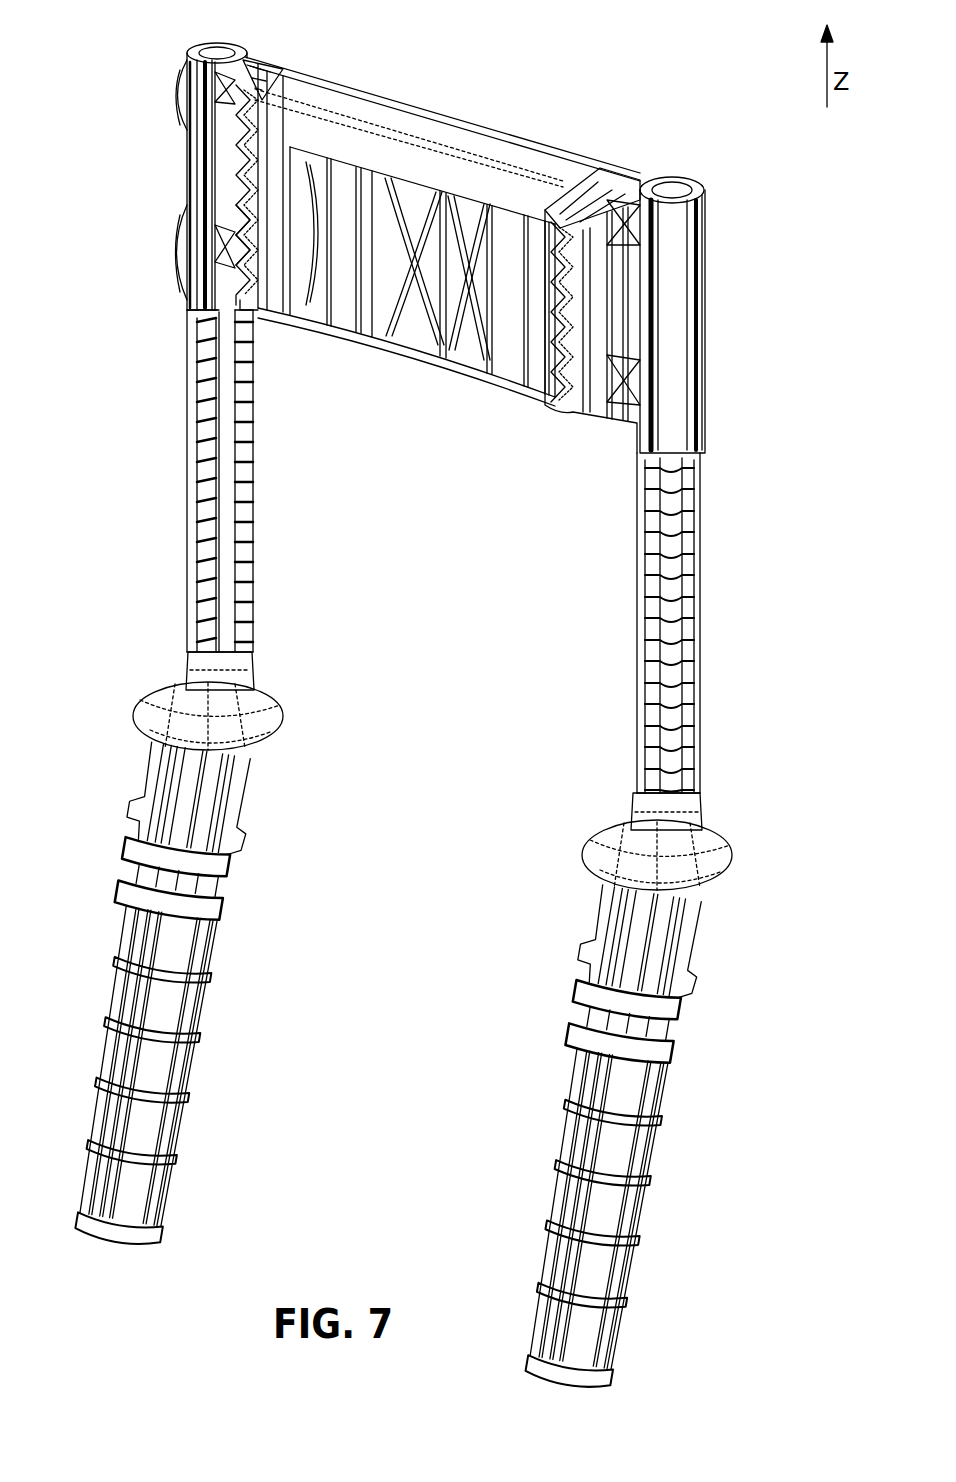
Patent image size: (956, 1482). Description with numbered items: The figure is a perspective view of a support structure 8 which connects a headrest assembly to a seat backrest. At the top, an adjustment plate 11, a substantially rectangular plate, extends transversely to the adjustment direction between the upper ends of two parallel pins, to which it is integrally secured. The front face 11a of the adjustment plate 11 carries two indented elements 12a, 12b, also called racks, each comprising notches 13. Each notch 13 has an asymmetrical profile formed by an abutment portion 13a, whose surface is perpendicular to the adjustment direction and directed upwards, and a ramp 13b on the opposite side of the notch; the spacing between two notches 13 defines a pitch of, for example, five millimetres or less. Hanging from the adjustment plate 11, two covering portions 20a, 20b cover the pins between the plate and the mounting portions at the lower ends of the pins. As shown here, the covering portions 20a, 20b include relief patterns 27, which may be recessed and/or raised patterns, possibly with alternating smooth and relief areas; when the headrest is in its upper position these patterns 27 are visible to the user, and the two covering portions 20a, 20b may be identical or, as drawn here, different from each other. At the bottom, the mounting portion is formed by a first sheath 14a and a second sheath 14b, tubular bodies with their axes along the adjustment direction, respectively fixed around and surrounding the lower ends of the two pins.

The support structure 8 is at (693, 108).
The adjustment plate 11 is at (450, 150).
The front face 11a is at (370, 150).
The indented element 12a is at (261, 140).
The indented element 12b is at (583, 240).
The notches 13 is at (233, 188).
The abutment portion 13a is at (233, 218).
The ramp 13b is at (243, 237).
The covering portion 20a is at (227, 474).
The covering portion 20b is at (655, 522).
The relief patterns 27 is at (203, 381).
The first sheath 14a is at (150, 803).
The second sheath 14b is at (600, 943).